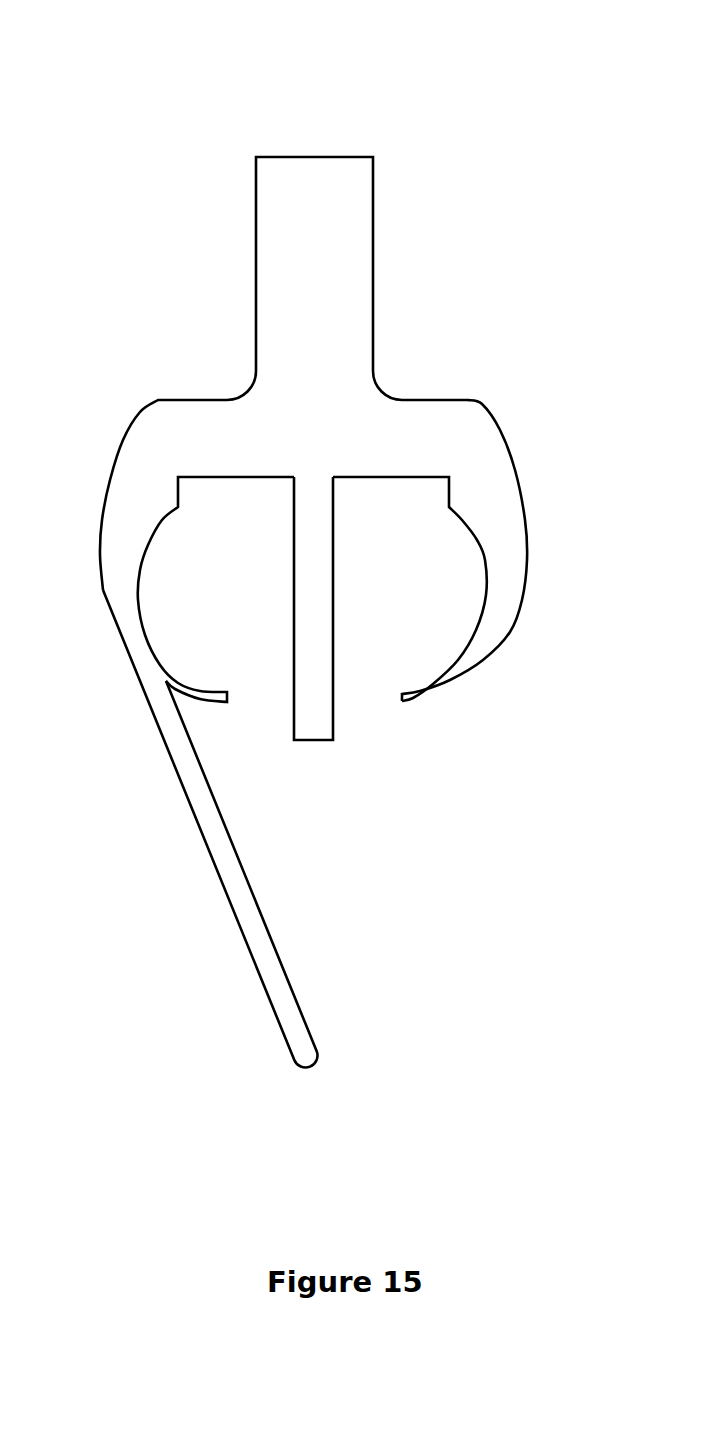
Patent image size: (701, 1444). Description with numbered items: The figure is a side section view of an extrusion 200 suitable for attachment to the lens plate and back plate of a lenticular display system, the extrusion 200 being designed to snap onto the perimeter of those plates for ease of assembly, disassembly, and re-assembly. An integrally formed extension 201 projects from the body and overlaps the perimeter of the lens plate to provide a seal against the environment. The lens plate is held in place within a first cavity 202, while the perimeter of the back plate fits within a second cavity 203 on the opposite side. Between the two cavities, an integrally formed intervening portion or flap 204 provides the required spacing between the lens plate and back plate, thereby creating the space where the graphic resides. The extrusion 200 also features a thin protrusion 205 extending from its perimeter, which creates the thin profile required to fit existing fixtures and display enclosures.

The extrusion 200 is at (404, 103).
The extension 201 is at (260, 950).
The first cavity 202 is at (213, 557).
The second cavity 203 is at (432, 557).
The intervening portion or flap 204 is at (320, 727).
The thin protrusion 205 is at (296, 224).